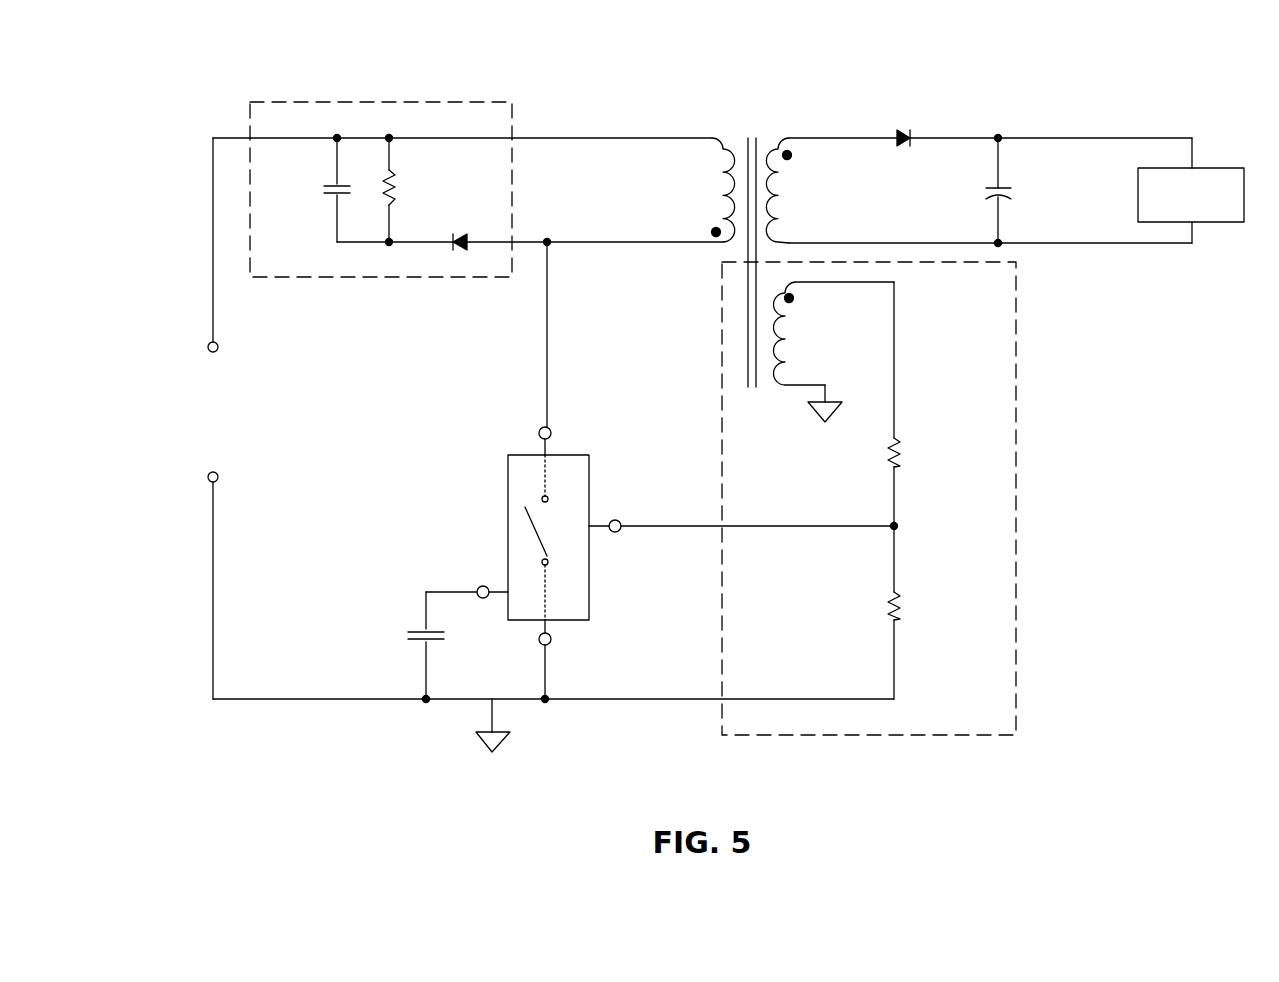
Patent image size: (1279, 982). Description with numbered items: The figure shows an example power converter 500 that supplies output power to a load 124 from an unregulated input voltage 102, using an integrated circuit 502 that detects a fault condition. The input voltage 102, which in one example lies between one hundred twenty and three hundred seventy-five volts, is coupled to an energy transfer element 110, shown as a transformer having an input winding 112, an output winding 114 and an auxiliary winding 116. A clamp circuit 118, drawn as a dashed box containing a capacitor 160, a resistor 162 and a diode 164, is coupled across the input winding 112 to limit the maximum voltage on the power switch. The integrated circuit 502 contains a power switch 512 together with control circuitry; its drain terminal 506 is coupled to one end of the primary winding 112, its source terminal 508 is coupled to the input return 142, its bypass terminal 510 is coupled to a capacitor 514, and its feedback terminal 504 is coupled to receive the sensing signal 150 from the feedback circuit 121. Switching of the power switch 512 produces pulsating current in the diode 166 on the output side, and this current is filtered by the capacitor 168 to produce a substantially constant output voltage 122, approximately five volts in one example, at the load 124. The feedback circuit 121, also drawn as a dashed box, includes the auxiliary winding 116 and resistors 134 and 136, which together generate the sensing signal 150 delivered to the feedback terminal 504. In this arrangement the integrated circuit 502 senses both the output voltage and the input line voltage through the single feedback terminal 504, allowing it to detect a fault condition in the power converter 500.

The power converter 500 is at (582, 50).
The input voltage 102 is at (183, 412).
The energy transfer element 110 is at (775, 241).
The input winding 112 is at (712, 186).
The output winding 114 is at (798, 188).
The auxiliary winding 116 is at (793, 336).
The clamp circuit 118 is at (381, 223).
The feedback circuit 121 is at (863, 498).
The output voltage 122 is at (1057, 188).
The load 124 is at (1215, 158).
The resistor 134 is at (907, 455).
The resistor 136 is at (912, 613).
The input return 142 is at (475, 712).
The sensing signal 150 is at (822, 532).
The capacitor 160 is at (320, 185).
The resistor 162 is at (403, 185).
The diode 164 is at (456, 231).
The diode 166 is at (900, 122).
The capacitor 168 is at (977, 202).
The integrated circuit 502 is at (553, 471).
The feedback terminal 504 is at (632, 513).
The drain terminal 506 is at (537, 423).
The source terminal 508 is at (555, 640).
The bypass terminal 510 is at (473, 599).
The power switch 512 is at (520, 528).
The capacitor 514 is at (407, 635).